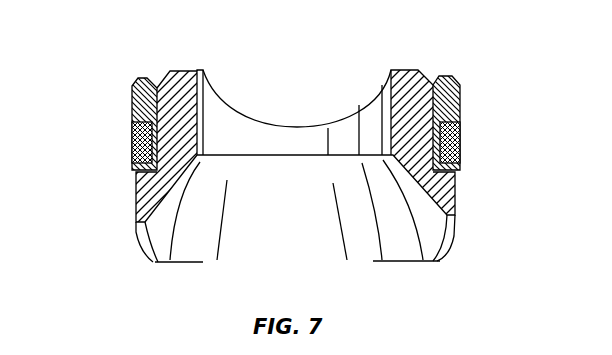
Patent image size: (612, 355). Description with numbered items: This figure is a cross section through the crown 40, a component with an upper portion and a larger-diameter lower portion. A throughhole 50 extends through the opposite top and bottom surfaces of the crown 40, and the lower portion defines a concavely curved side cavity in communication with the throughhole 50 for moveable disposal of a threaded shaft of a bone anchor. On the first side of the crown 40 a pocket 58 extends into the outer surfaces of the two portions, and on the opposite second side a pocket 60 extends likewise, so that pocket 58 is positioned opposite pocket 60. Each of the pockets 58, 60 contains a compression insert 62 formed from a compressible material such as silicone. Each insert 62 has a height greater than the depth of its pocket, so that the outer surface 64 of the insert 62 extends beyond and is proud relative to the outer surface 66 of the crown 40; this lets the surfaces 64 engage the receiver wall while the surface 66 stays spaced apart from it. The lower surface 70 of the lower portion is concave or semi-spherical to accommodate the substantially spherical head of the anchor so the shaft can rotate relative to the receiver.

The crown 40 is at (136, 213).
The throughhole 50 is at (244, 141).
The pocket 58 is at (165, 108).
The pocket 60 is at (428, 105).
The compression insert 62 is at (138, 125).
The outer surface of insert 64 is at (130, 103).
The outer surface of crown 66 is at (137, 190).
The lower surface 70 is at (388, 238).